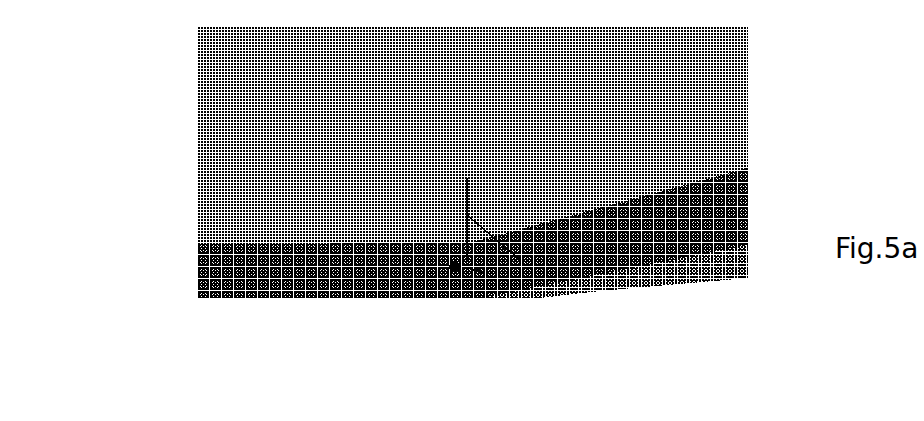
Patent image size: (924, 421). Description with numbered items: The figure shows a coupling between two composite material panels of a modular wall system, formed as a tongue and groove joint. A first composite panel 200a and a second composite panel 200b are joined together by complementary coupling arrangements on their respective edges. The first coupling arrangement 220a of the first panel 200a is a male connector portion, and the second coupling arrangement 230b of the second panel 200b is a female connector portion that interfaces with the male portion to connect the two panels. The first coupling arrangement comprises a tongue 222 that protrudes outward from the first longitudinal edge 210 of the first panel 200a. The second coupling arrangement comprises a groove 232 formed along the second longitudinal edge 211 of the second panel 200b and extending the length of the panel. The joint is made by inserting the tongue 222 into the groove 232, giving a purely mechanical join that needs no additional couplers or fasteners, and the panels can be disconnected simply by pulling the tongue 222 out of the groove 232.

The first composite panel 200a is at (680, 237).
The second composite panel 200b is at (295, 258).
The first longitudinal edge 210 is at (467, 215).
The second longitudinal edge 211 is at (460, 168).
The first coupling arrangement 220a is at (516, 213).
The tongue 222 is at (470, 270).
The second coupling arrangement 230b is at (425, 260).
The groove 232 is at (453, 270).